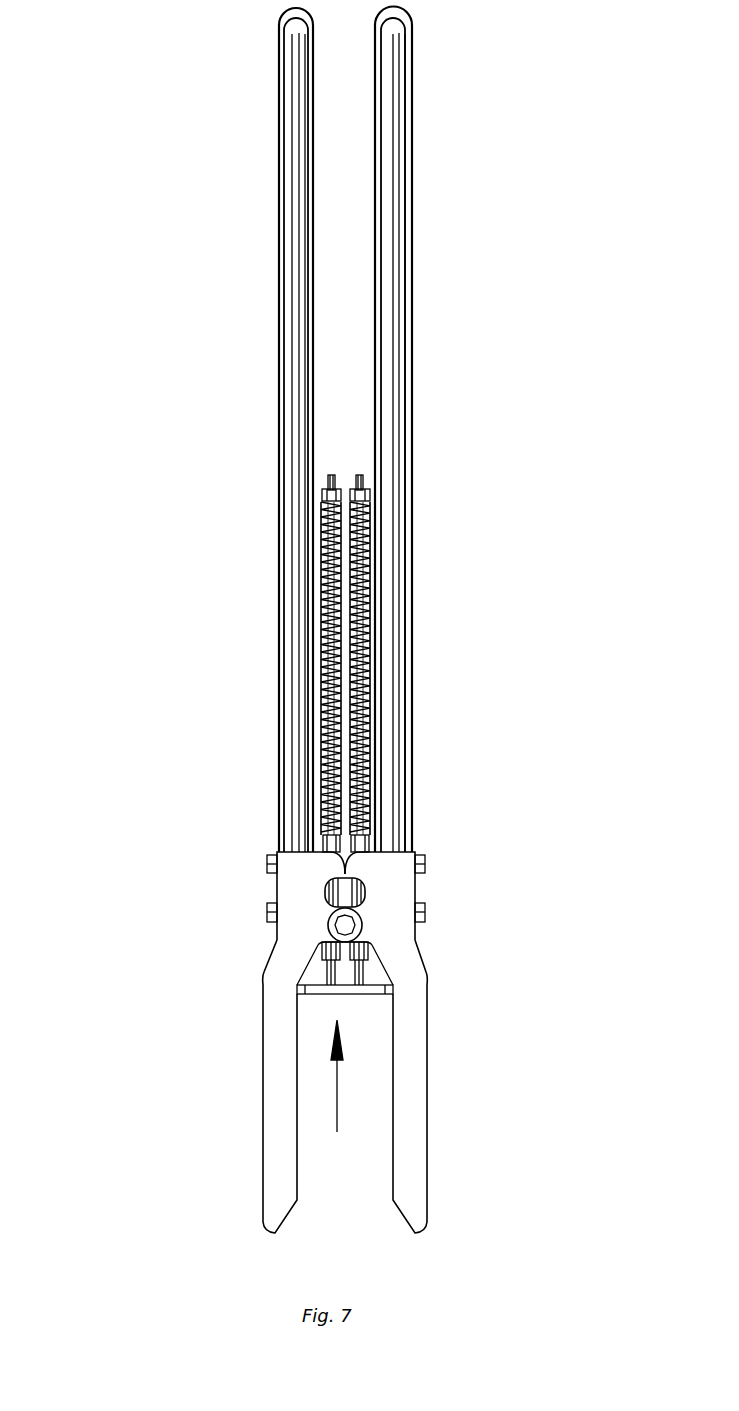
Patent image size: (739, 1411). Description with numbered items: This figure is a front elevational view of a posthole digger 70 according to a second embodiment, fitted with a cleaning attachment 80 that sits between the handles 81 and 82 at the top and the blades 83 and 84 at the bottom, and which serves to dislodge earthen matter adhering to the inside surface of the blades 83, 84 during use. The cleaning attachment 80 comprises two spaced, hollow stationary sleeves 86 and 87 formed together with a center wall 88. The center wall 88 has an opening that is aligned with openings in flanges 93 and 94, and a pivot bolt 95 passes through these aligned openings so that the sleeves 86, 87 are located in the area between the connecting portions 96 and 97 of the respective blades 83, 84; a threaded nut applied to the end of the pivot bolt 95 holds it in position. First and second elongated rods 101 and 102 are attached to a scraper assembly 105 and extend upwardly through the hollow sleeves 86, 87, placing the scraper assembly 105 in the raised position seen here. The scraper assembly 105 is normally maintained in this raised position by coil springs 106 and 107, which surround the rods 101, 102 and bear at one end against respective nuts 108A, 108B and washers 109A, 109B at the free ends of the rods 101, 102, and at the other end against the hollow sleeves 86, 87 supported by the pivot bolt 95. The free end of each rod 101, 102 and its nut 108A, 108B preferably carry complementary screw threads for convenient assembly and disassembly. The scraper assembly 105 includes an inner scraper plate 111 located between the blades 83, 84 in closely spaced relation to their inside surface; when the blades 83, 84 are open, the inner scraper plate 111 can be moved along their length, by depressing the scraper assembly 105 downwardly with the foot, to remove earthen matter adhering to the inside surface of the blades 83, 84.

The posthole digger 70 is at (182, 176).
The cleaning attachment 80 is at (349, 288).
The handle 81 is at (292, 135).
The handle 82 is at (388, 120).
The blade 83 is at (278, 1147).
The blade 84 is at (413, 1120).
The hollow stationary sleeve 86 is at (300, 840).
The hollow stationary sleeve 87 is at (385, 842).
The center wall 88 is at (360, 888).
The flange 93 is at (300, 887).
The flange 94 is at (383, 925).
The pivot bolt 95 is at (330, 945).
The connecting portion 96 is at (343, 926).
The connecting portion 97 is at (415, 942).
The first elongated rod 101 is at (320, 720).
The second elongated rod 102 is at (368, 685).
The scraper assembly 105 is at (342, 1092).
The coil spring 106 is at (320, 605).
The coil spring 107 is at (368, 580).
The nut 108A is at (326, 495).
The nut 108B is at (365, 495).
The washer 109A is at (322, 492).
The washer 109B is at (368, 500).
The inner scraper plate 111 is at (397, 983).